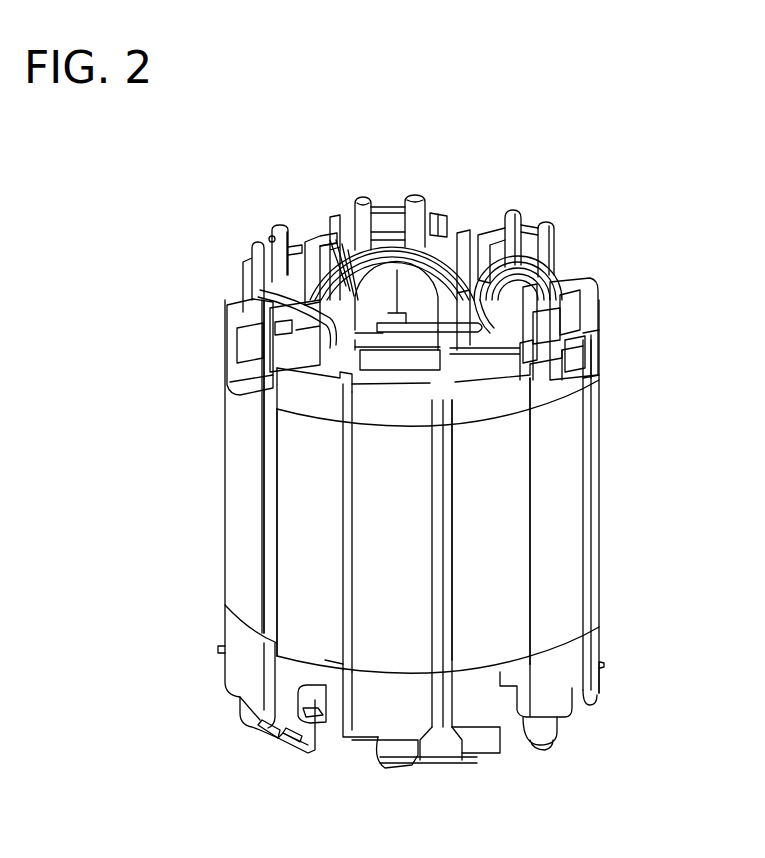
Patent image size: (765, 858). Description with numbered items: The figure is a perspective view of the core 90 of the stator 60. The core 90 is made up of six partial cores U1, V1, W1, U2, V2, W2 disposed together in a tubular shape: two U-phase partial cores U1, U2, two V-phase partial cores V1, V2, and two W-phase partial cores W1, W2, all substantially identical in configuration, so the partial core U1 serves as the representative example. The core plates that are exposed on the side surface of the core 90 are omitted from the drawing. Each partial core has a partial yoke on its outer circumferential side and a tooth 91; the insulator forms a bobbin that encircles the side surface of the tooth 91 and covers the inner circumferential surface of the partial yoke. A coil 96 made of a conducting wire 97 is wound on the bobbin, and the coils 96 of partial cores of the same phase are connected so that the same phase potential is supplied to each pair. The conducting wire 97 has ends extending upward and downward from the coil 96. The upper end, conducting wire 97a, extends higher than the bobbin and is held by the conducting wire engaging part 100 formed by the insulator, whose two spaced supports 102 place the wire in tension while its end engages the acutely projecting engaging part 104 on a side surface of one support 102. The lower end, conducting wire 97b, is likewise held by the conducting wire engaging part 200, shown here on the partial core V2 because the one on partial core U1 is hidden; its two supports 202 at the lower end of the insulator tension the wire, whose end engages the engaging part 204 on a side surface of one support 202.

The stator 60 is at (626, 214).
The core 90 is at (611, 545).
The tooth 91 is at (272, 238).
The coil 96 is at (383, 222).
The conducting wire 97 is at (378, 232).
The conducting wire 97a is at (356, 222).
The conducting wire 97b is at (265, 740).
The conducting wire engaging part 100 is at (505, 106).
The supports 102 is at (421, 198).
The engaging part 104 is at (447, 215).
The conducting wire engaging part 200 is at (247, 764).
The supports 202 is at (272, 750).
The engaging part 204 is at (318, 752).
The partial core U1 is at (332, 226).
The partial core U2 is at (508, 504).
The partial core V1 is at (522, 232).
The partial core V2 is at (318, 544).
The partial core W1 is at (600, 343).
The partial core W2 is at (237, 294).